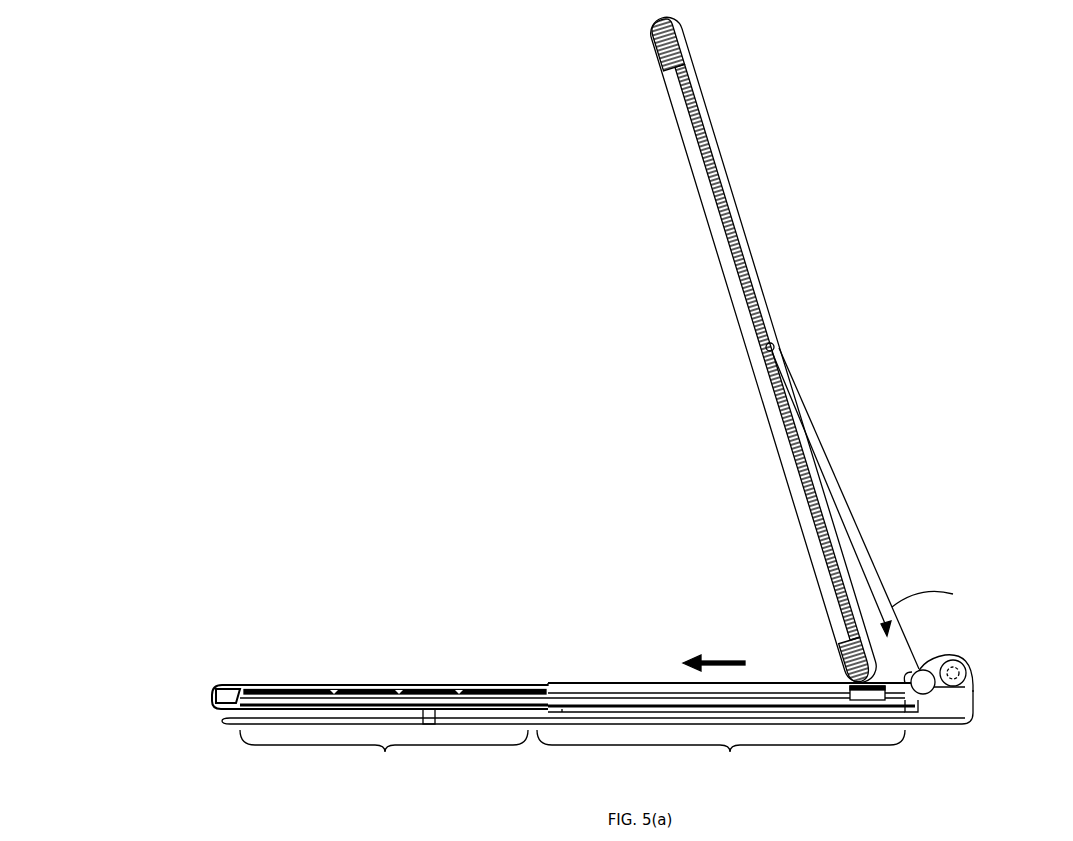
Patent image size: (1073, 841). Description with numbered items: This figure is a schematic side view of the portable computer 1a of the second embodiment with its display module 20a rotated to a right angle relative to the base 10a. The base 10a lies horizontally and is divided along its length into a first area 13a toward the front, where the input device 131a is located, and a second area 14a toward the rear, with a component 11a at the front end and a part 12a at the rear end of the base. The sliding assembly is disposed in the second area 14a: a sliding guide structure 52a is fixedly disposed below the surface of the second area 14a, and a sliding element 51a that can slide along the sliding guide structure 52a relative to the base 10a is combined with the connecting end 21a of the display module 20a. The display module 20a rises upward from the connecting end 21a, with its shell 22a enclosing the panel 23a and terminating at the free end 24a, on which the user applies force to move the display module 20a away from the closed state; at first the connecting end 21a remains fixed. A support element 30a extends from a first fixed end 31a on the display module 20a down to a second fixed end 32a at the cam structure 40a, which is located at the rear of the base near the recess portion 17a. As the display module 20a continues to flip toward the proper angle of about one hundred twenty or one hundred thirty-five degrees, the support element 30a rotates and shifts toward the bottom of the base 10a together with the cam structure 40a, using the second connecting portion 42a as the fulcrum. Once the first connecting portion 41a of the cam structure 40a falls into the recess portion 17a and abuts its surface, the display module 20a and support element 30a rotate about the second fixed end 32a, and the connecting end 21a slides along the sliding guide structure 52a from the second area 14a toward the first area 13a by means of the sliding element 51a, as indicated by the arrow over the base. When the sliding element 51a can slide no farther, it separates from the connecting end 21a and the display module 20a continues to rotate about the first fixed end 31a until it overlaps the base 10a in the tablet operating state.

The portable computer 1a is at (328, 308).
The base 10a is at (222, 714).
The front pocket of base 11a is at (214, 695).
The bottom shell of base 12a is at (976, 690).
The first area 13a is at (380, 734).
The input device 131a is at (408, 690).
The second area 14a is at (728, 731).
The recess portion 17a is at (915, 703).
The display module 20a is at (660, 126).
The connecting end 21a is at (858, 663).
The lid shell 22a is at (701, 200).
The display panel 23a is at (757, 270).
The free end 24a is at (658, 42).
The support element 30a is at (848, 460).
The first fixed end 31a is at (776, 347).
The second fixed end 32a is at (933, 671).
The cam structure 40a is at (970, 650).
The first connecting portion 41a is at (906, 679).
The second connecting portion 42a is at (961, 673).
The sliding element 51a is at (858, 688).
The sliding guide structure 52a is at (611, 697).